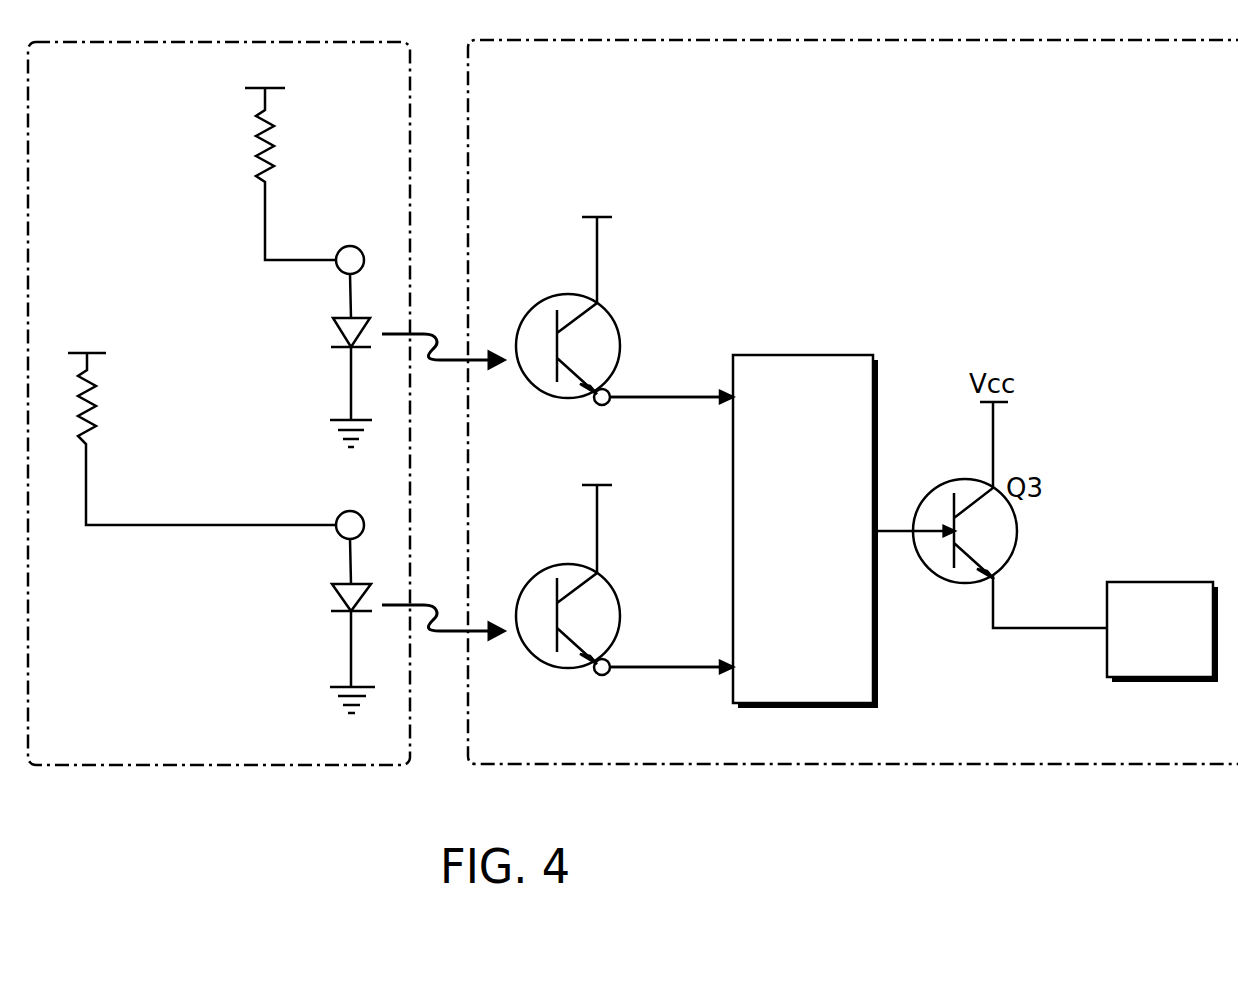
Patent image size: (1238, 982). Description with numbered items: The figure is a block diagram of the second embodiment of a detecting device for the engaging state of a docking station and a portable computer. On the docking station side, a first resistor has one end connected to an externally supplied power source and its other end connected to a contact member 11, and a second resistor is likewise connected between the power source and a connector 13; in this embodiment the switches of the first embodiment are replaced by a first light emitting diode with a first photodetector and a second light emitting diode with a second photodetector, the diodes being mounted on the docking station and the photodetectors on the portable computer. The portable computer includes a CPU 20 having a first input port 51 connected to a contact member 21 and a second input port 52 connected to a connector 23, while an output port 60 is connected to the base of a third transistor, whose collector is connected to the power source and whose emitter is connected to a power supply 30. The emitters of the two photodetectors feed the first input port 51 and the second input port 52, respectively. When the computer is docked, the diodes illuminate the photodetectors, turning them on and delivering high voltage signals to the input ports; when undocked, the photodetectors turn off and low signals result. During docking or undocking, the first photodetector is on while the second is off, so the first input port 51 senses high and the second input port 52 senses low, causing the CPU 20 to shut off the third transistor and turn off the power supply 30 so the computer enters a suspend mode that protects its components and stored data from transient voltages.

The contact member 11 is at (337, 267).
The connector 13 is at (338, 514).
The central processing unit 20 is at (813, 530).
The contact member 21 is at (597, 405).
The connector 23 is at (597, 675).
The power supply 30 is at (1137, 582).
The first input port 51 is at (691, 398).
The second input port 52 is at (691, 669).
The output port 60 is at (898, 531).